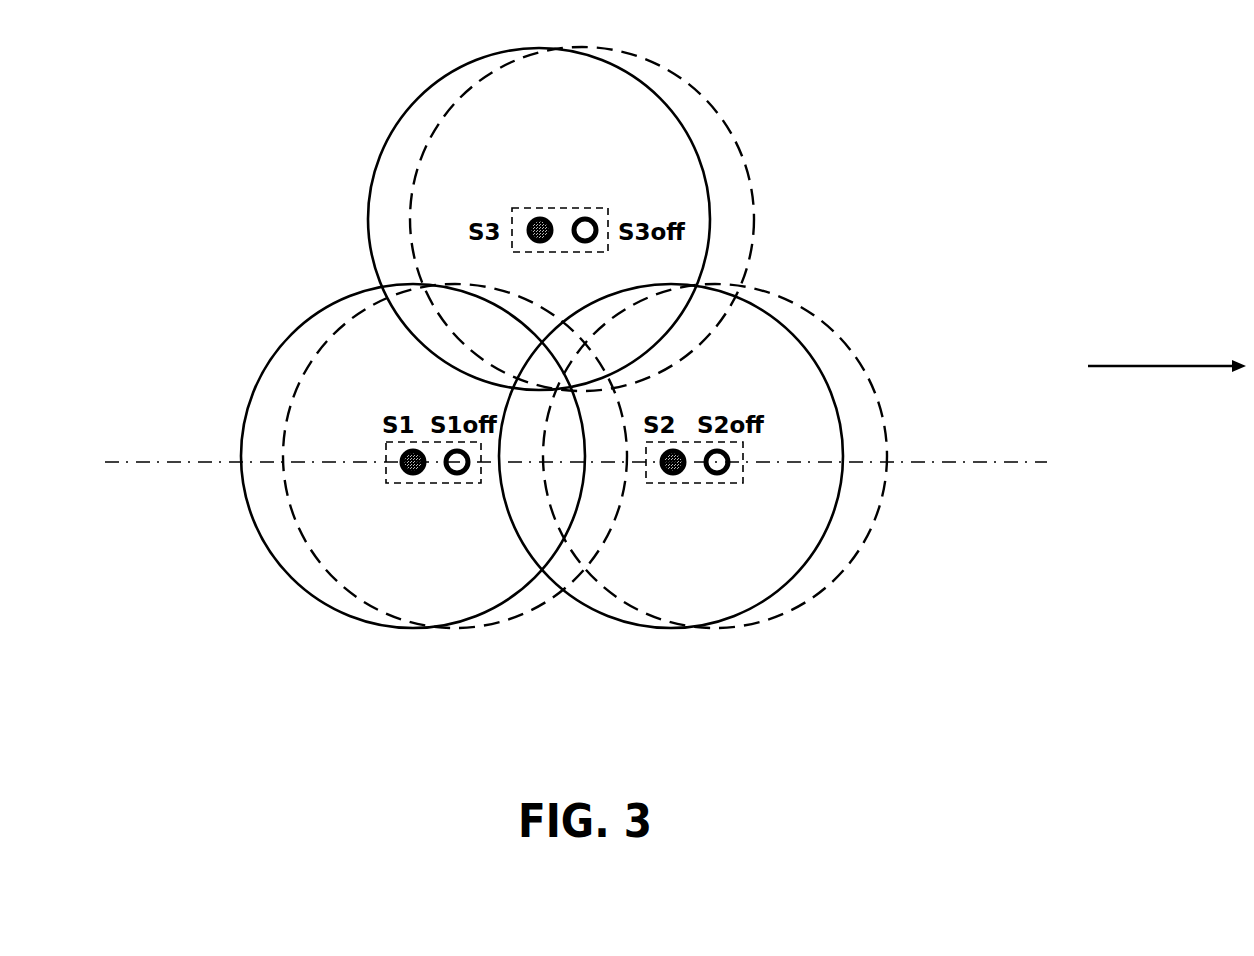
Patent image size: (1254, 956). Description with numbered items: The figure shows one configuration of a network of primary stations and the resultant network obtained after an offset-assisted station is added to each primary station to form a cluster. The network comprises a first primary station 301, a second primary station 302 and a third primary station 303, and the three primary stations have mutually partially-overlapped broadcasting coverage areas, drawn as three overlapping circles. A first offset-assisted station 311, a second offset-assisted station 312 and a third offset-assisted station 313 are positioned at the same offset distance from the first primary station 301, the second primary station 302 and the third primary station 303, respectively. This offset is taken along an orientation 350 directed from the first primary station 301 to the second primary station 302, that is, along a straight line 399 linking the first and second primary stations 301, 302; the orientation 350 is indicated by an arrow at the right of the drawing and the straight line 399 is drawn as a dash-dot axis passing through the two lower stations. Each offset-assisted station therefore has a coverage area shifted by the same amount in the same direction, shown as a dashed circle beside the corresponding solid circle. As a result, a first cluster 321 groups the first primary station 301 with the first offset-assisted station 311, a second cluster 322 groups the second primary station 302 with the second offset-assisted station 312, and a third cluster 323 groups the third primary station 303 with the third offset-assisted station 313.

The first primary station 301 is at (405, 477).
The first offset-assisted station 311 is at (450, 477).
The second primary station 302 is at (665, 477).
The second offset-assisted station 312 is at (712, 477).
The third primary station 303 is at (537, 215).
The third offset-assisted station 313 is at (585, 215).
The first cluster 321 is at (385, 452).
The second cluster 322 is at (745, 478).
The third cluster 323 is at (510, 222).
The orientation 350 is at (1155, 363).
The straight line 399 is at (172, 463).